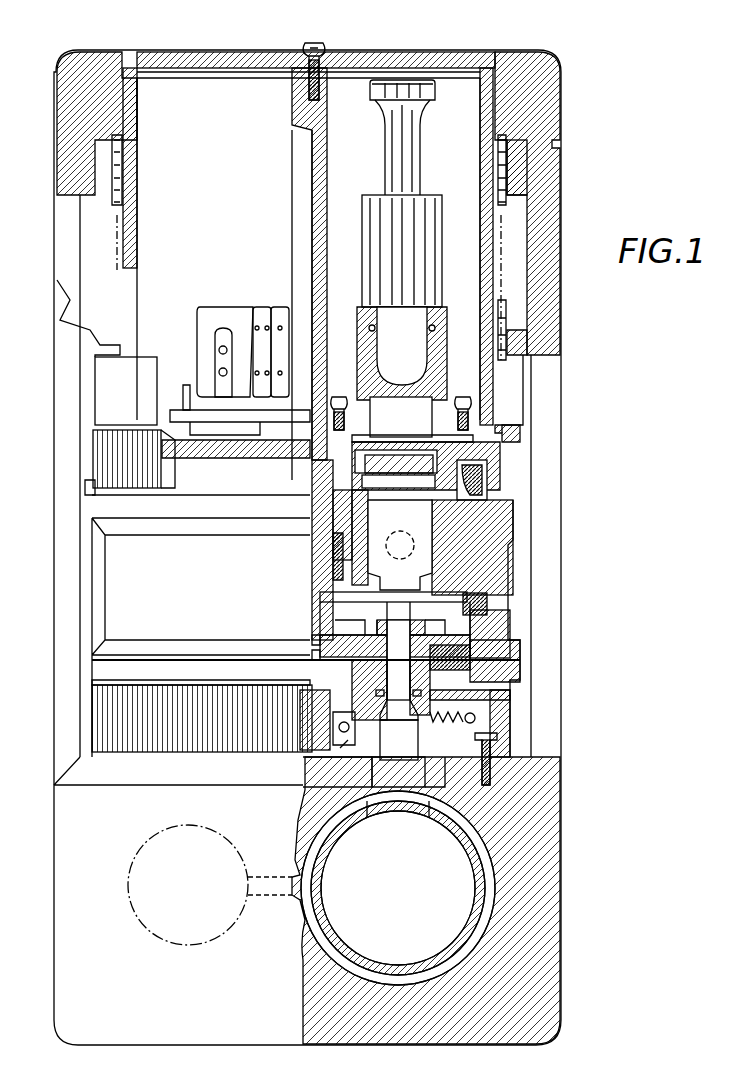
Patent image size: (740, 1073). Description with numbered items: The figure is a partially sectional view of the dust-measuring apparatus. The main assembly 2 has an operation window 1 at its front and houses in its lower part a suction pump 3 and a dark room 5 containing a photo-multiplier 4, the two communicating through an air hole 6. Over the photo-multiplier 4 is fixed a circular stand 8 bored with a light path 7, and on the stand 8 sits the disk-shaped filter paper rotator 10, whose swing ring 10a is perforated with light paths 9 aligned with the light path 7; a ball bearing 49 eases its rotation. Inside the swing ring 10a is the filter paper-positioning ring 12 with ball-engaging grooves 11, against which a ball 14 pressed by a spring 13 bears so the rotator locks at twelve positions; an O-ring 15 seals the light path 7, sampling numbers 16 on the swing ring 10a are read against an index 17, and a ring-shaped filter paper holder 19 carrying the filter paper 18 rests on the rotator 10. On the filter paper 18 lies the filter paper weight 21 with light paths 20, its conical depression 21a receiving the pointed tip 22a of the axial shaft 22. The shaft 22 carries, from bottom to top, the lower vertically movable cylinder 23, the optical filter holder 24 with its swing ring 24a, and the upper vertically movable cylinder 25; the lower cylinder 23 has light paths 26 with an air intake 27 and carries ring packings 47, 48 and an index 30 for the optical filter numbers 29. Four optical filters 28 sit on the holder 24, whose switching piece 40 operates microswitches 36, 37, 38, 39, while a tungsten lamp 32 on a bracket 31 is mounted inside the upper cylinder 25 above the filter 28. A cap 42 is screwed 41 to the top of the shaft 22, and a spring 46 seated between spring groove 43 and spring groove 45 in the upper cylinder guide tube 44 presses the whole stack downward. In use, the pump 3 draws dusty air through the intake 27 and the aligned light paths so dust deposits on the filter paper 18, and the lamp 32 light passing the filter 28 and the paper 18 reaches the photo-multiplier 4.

The operation window 1 is at (55, 540).
The main assembly 2 is at (53, 818).
The suction pump 3 is at (125, 885).
The photo-multiplier 4 is at (330, 940).
The dark room 5 is at (345, 970).
The air hole 6 is at (300, 895).
The light path 7 is at (398, 772).
The stand 8 is at (445, 770).
The light paths 9 is at (387, 673).
The filter paper rotator 10 is at (512, 693).
The swing ring 10a is at (92, 735).
The ball-engaging grooves 11 is at (475, 712).
The filter paper-positioning ring 12 is at (566, 770).
The spring 13 is at (400, 750).
The ball 14 is at (497, 735).
The O-ring 15 is at (376, 693).
The sampling numbers 16 is at (140, 700).
The index 17 is at (292, 659).
The filter paper 18 is at (520, 642).
The filter paper holder 19 is at (470, 660).
The light paths 20 is at (398, 630).
The filter paper weight 21 is at (512, 620).
The depression 21a is at (310, 648).
The axial shaft 22 is at (305, 150).
The pointed tip 22a is at (310, 625).
The lower vertically movable cylinder 23 is at (105, 603).
The optical filter holder 24 is at (505, 450).
The swing ring 24a is at (95, 490).
The upper vertically movable cylinder 25 is at (192, 80).
The light paths 26 is at (415, 580).
The air intake 27 is at (405, 534).
The optical filters 28 is at (395, 458).
The optical filter numbers 29 is at (145, 450).
The index 30 is at (298, 500).
The bracket 31 is at (447, 330).
The tungsten lamp 32 is at (390, 368).
The microswitch 36 is at (205, 318).
The microswitch 37 is at (245, 320).
The microswitch 38 is at (262, 310).
The microswitch 39 is at (285, 312).
The switching piece 40 is at (183, 392).
The screw 41 is at (314, 44).
The cap 42 is at (450, 55).
The spring groove 43 is at (506, 352).
The upper cylinder guide tube 44 is at (560, 102).
The spring groove 45 is at (122, 157).
The spring 46 is at (122, 180).
The ring packing 47 is at (495, 600).
The ring packing 48 is at (487, 478).
The ball bearing 49 is at (335, 745).